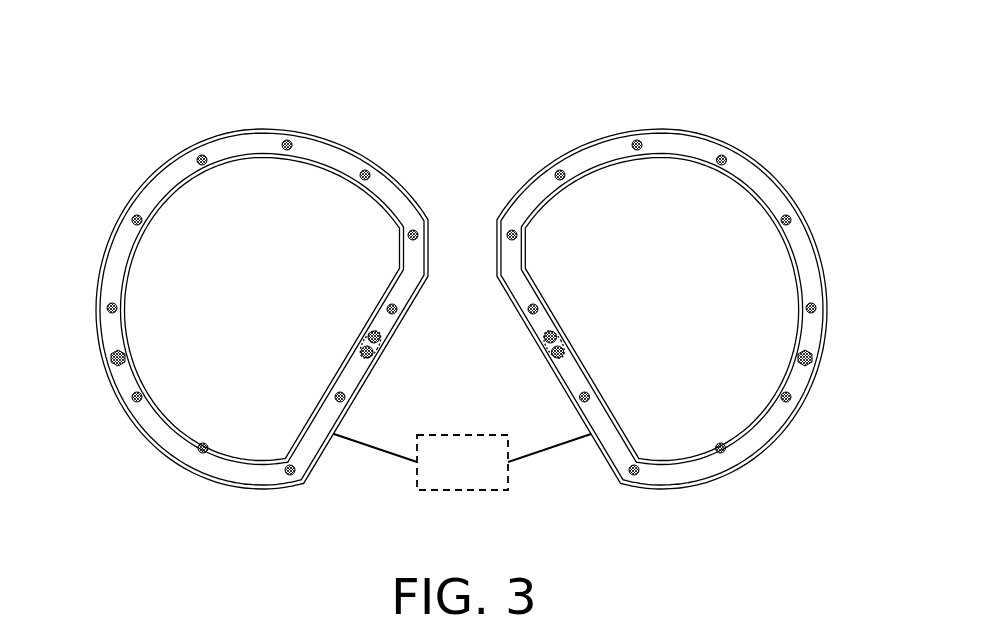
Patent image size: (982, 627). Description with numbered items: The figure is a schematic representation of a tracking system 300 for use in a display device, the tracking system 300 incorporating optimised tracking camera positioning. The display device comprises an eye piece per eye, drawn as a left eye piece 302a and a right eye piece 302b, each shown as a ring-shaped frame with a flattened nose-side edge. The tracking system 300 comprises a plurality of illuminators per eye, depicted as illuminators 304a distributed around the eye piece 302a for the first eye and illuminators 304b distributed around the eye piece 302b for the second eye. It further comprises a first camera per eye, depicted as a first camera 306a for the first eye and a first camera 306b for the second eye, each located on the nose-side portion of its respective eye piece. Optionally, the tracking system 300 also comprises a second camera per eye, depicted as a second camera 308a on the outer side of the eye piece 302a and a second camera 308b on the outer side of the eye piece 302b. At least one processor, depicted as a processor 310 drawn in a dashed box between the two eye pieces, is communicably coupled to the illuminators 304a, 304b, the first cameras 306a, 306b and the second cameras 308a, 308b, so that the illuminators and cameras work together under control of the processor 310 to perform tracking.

The tracking system 300 is at (118, 68).
The eye piece 302a is at (229, 290).
The eye piece 302b is at (696, 290).
The illuminators 304a is at (271, 284).
The illuminators 304b is at (655, 284).
The first camera 306a is at (395, 364).
The first camera 306b is at (530, 364).
The second camera 308a is at (74, 364).
The second camera 308b is at (849, 364).
The processor 310 is at (485, 477).